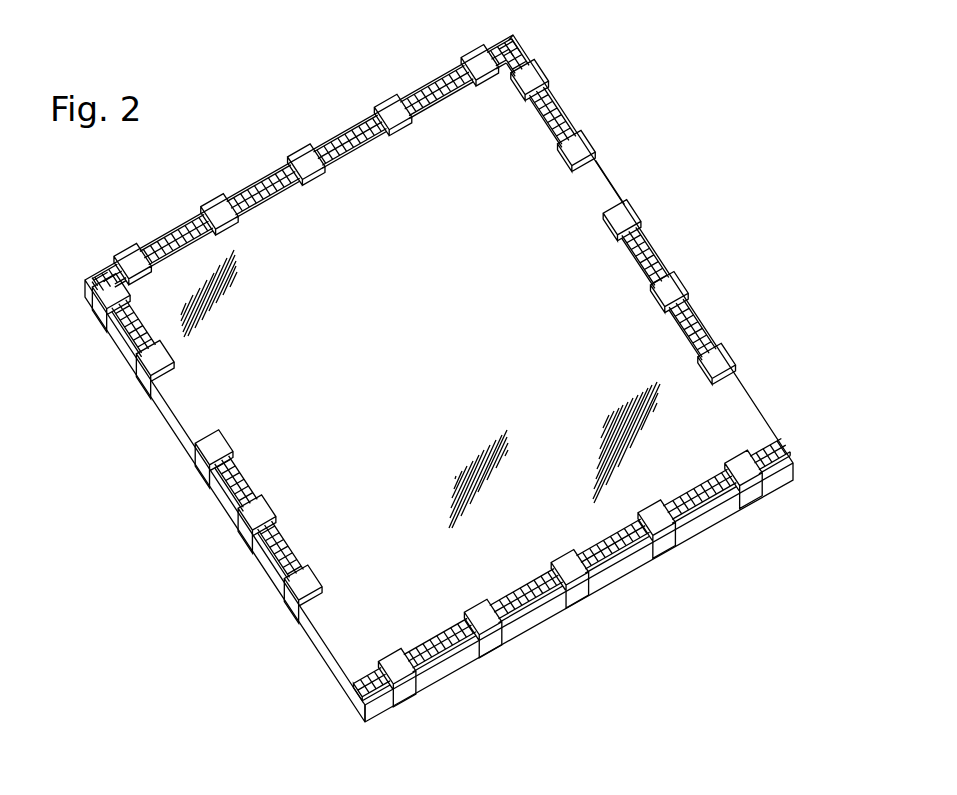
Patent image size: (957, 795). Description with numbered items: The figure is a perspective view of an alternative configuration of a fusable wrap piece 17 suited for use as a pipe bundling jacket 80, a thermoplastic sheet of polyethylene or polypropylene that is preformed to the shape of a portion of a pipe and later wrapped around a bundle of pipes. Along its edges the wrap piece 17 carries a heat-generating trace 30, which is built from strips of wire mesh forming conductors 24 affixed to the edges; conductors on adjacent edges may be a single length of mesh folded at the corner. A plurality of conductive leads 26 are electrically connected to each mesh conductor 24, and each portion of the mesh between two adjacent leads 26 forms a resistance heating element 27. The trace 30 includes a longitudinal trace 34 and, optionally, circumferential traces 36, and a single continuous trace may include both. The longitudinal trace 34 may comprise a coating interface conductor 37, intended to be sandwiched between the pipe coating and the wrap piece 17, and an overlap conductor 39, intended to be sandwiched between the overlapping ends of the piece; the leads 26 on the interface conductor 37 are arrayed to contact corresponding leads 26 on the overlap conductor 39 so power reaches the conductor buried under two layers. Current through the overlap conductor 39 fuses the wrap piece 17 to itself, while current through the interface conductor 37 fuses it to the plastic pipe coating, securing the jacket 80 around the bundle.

The wrap piece 17 is at (767, 418).
The wire mesh conductor 24 is at (497, 55).
The conductive lead 26 is at (553, 85).
The resistance heating element 27 is at (374, 114).
The heat-generating trace 30 is at (436, 388).
The longitudinal trace 34 is at (270, 187).
The circumferential trace 36 is at (565, 114).
The coating interface conductor 37 is at (460, 672).
The overlap conductor 39 is at (449, 90).
The pipe bundling jacket 80 is at (576, 203).